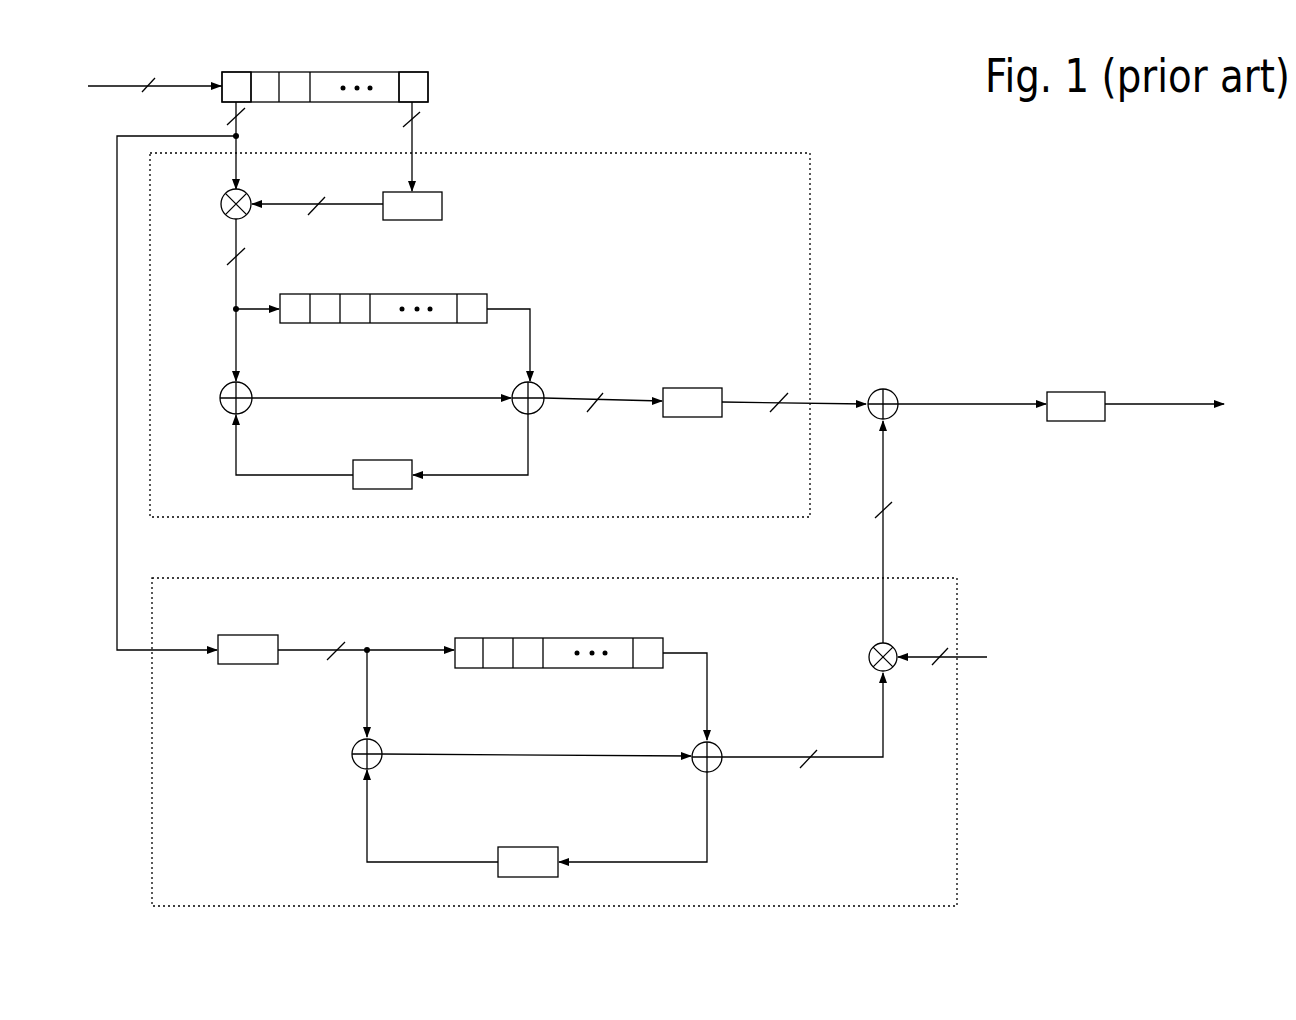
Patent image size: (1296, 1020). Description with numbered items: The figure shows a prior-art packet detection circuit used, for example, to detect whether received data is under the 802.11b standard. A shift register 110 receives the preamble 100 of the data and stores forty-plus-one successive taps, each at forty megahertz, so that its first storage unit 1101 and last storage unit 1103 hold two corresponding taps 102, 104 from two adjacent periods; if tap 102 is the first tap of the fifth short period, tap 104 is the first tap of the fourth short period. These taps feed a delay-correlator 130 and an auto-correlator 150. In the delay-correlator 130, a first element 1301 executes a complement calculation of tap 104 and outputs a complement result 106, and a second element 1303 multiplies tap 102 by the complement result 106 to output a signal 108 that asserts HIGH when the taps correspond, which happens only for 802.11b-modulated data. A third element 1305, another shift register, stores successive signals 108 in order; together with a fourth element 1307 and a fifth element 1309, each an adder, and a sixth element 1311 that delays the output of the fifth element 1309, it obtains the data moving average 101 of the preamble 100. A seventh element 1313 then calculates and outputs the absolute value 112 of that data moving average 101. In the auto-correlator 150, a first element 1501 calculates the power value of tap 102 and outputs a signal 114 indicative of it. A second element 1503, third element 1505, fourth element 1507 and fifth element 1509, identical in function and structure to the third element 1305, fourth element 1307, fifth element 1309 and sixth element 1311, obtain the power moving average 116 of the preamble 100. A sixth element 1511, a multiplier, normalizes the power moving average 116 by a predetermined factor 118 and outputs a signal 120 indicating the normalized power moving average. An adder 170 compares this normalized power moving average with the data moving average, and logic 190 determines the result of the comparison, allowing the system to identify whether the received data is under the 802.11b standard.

The preamble 100 is at (152, 83).
The shift register 110 is at (330, 72).
The first storage unit 1101 is at (230, 73).
The last storage unit 1103 is at (420, 72).
The tap 102 is at (230, 115).
The tap 104 is at (415, 118).
The complement result 106 is at (328, 207).
The signal 108 is at (237, 260).
The delay-correlator 130 is at (812, 195).
The first element 1301 is at (442, 205).
The second element 1303 is at (220, 207).
The third element 1305 is at (413, 293).
The fourth element 1307 is at (220, 397).
The fifth element 1309 is at (520, 413).
The sixth element 1311 is at (383, 490).
The seventh element 1313 is at (690, 388).
The data moving average 101 is at (600, 403).
The absolute value 112 is at (773, 397).
The adder 170 is at (898, 395).
The logic 190 is at (1073, 392).
The signal 120 is at (885, 510).
The auto-correlator 150 is at (957, 837).
The first element 1501 is at (248, 665).
The signal 114 is at (330, 648).
The second element 1503 is at (558, 638).
The third element 1505 is at (352, 762).
The fourth element 1507 is at (693, 755).
The fifth element 1509 is at (528, 847).
The power moving average 116 is at (815, 760).
The sixth element 1511 is at (868, 662).
The predetermined factor 118 is at (942, 652).